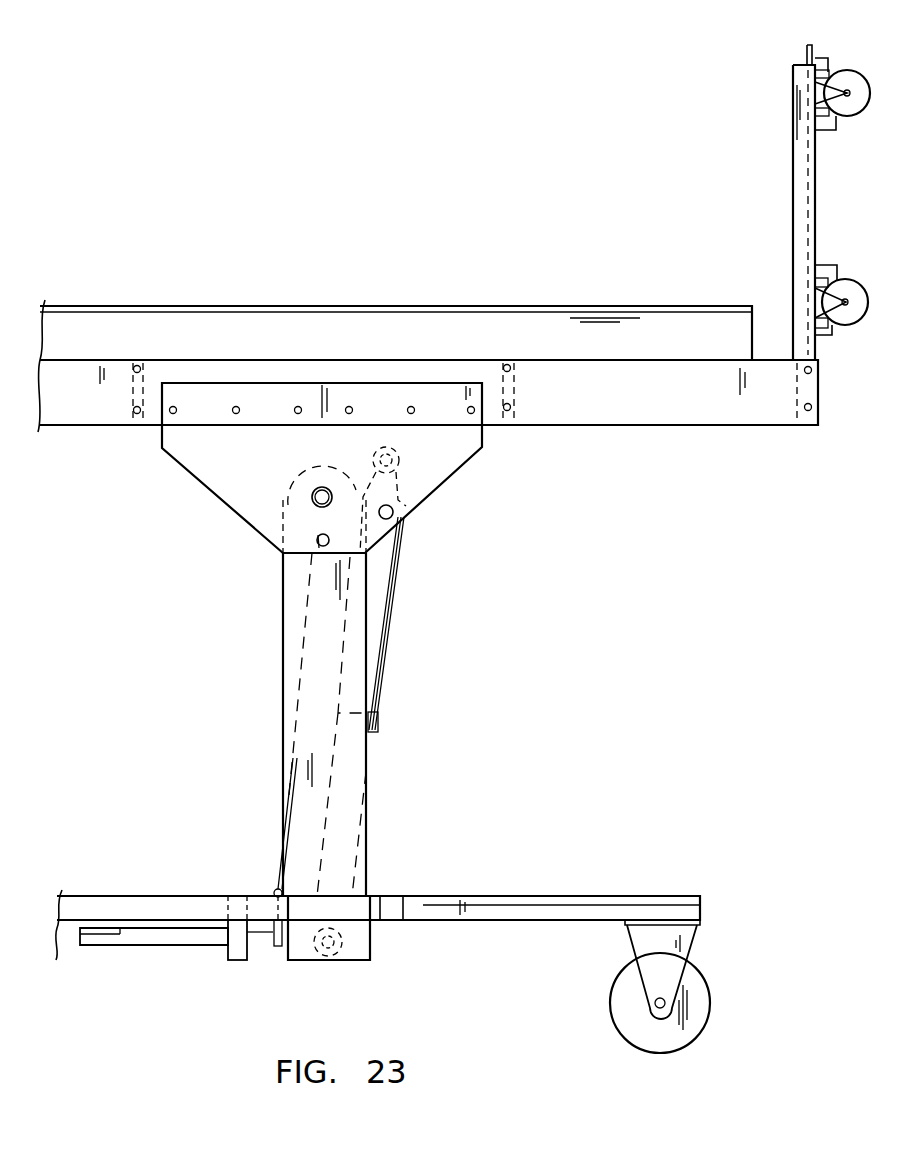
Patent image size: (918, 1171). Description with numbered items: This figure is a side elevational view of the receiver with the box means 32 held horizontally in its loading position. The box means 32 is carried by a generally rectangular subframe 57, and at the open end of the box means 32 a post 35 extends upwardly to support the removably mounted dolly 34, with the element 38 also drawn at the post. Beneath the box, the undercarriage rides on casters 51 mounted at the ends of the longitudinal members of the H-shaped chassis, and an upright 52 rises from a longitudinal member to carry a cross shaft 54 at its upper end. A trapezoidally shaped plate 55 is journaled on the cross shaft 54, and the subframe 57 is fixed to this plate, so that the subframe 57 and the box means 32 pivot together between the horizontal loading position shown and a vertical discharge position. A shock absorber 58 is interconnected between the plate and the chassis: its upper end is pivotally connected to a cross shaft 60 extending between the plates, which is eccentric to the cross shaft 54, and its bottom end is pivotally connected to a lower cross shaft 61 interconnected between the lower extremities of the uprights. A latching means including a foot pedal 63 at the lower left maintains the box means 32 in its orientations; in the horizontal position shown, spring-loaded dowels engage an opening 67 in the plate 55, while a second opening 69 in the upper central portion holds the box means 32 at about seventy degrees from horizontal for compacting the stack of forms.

The box means 32 is at (396, 322).
The dolly 34 is at (796, 56).
The post 35 is at (799, 215).
The casters on post 38 is at (833, 131).
The caster 51 is at (631, 1003).
The upright 52 is at (362, 877).
The cross shaft 54 is at (312, 507).
The trapezoidally shaped plate 55 is at (431, 483).
The subframe 57 is at (690, 407).
The shock absorber 58 is at (382, 662).
The cross shaft 60 is at (398, 457).
The lower cross shaft 61 is at (353, 972).
The foot pedal 63 is at (105, 946).
The opening 67 is at (323, 547).
The opening 69 is at (393, 514).